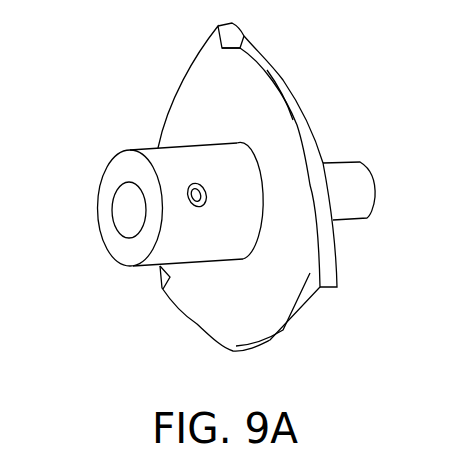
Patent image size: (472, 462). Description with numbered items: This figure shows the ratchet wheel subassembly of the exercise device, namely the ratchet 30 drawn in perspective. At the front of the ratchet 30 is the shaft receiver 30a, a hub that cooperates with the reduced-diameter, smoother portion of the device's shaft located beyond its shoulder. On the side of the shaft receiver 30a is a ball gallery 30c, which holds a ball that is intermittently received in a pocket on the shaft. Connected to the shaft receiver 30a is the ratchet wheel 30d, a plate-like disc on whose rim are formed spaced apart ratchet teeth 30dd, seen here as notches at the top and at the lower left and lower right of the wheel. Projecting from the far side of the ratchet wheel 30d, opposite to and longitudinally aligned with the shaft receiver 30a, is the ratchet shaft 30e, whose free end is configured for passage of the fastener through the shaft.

The ratchet 30 is at (95, 91).
The shaft receiver 30a is at (104, 208).
The ball gallery 30c is at (194, 183).
The ratchet wheel 30d is at (298, 108).
The ratchet teeth 30dd is at (235, 33).
The ratchet shaft 30e is at (369, 184).